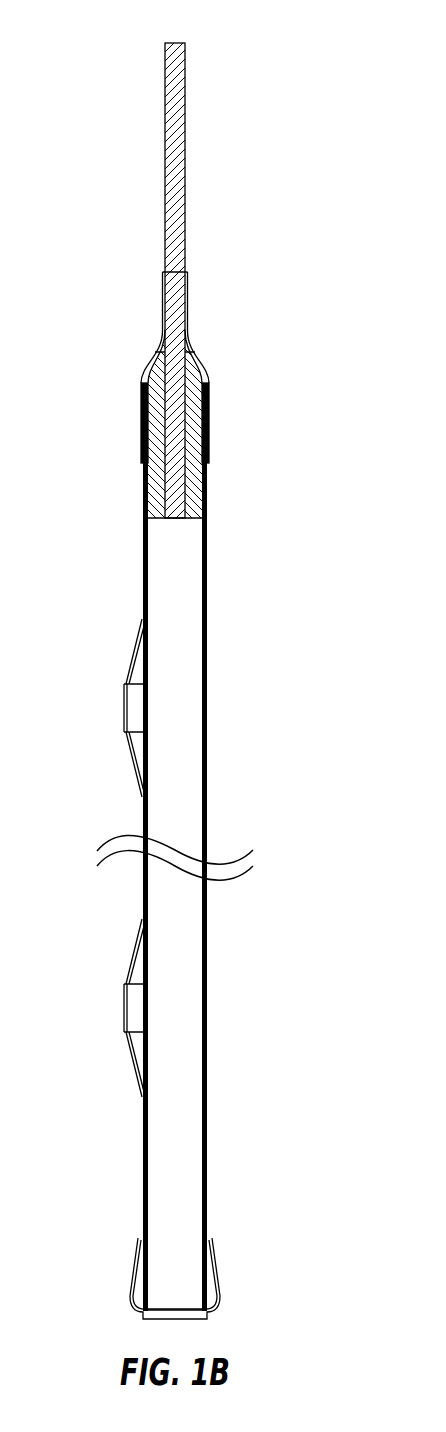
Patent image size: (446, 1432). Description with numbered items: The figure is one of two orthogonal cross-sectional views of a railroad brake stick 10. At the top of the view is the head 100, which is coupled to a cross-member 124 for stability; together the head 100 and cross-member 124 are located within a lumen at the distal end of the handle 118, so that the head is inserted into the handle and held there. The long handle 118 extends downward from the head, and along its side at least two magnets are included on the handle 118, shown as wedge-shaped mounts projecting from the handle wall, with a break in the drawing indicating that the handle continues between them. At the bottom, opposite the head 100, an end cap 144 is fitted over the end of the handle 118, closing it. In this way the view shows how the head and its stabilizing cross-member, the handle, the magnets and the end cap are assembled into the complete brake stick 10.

The railroad brake stick 10 is at (155, 72).
The head 100 is at (190, 763).
The handle 118 is at (190, 557).
The cross-member 124 is at (190, 473).
The end cap 144 is at (210, 1302).